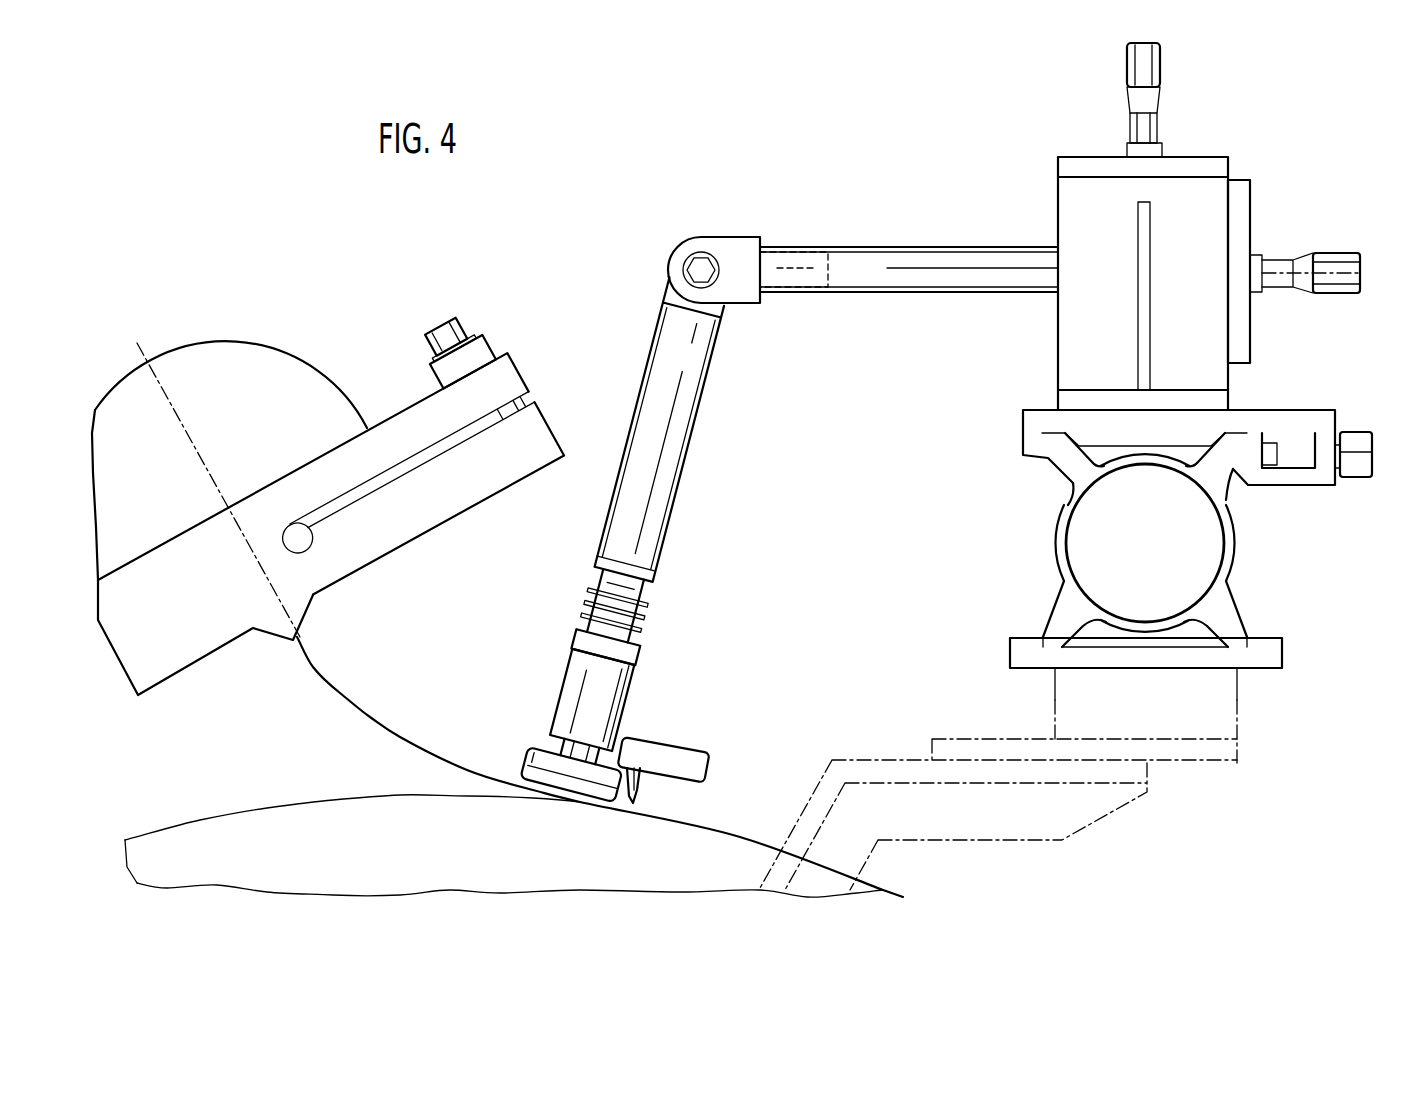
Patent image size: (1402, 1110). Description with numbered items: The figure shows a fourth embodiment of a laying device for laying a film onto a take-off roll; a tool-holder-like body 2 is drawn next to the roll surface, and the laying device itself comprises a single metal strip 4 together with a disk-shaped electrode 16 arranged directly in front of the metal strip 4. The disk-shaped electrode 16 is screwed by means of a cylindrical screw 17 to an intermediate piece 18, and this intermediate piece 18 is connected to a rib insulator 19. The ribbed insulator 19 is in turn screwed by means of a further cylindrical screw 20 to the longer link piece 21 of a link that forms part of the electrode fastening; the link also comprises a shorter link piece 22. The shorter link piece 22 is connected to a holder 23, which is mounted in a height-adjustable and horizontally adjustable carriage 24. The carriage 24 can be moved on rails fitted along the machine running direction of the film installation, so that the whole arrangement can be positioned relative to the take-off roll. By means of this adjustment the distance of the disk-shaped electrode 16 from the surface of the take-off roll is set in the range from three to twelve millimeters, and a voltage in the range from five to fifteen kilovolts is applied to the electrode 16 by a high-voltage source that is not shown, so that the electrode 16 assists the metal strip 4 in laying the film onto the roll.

The tool holder 2 is at (382, 546).
The metal strip 4 is at (638, 786).
The disk-shaped electrode 16 is at (526, 755).
The cylindrical screw 17 is at (580, 742).
The intermediate piece 18 is at (618, 678).
The rib insulator 19 is at (647, 622).
The further cylindrical screw 20 is at (596, 578).
The longer link piece 21 is at (690, 422).
The shorter link piece 22 is at (797, 286).
The holder 23 is at (942, 258).
The carriage 24 is at (1213, 380).